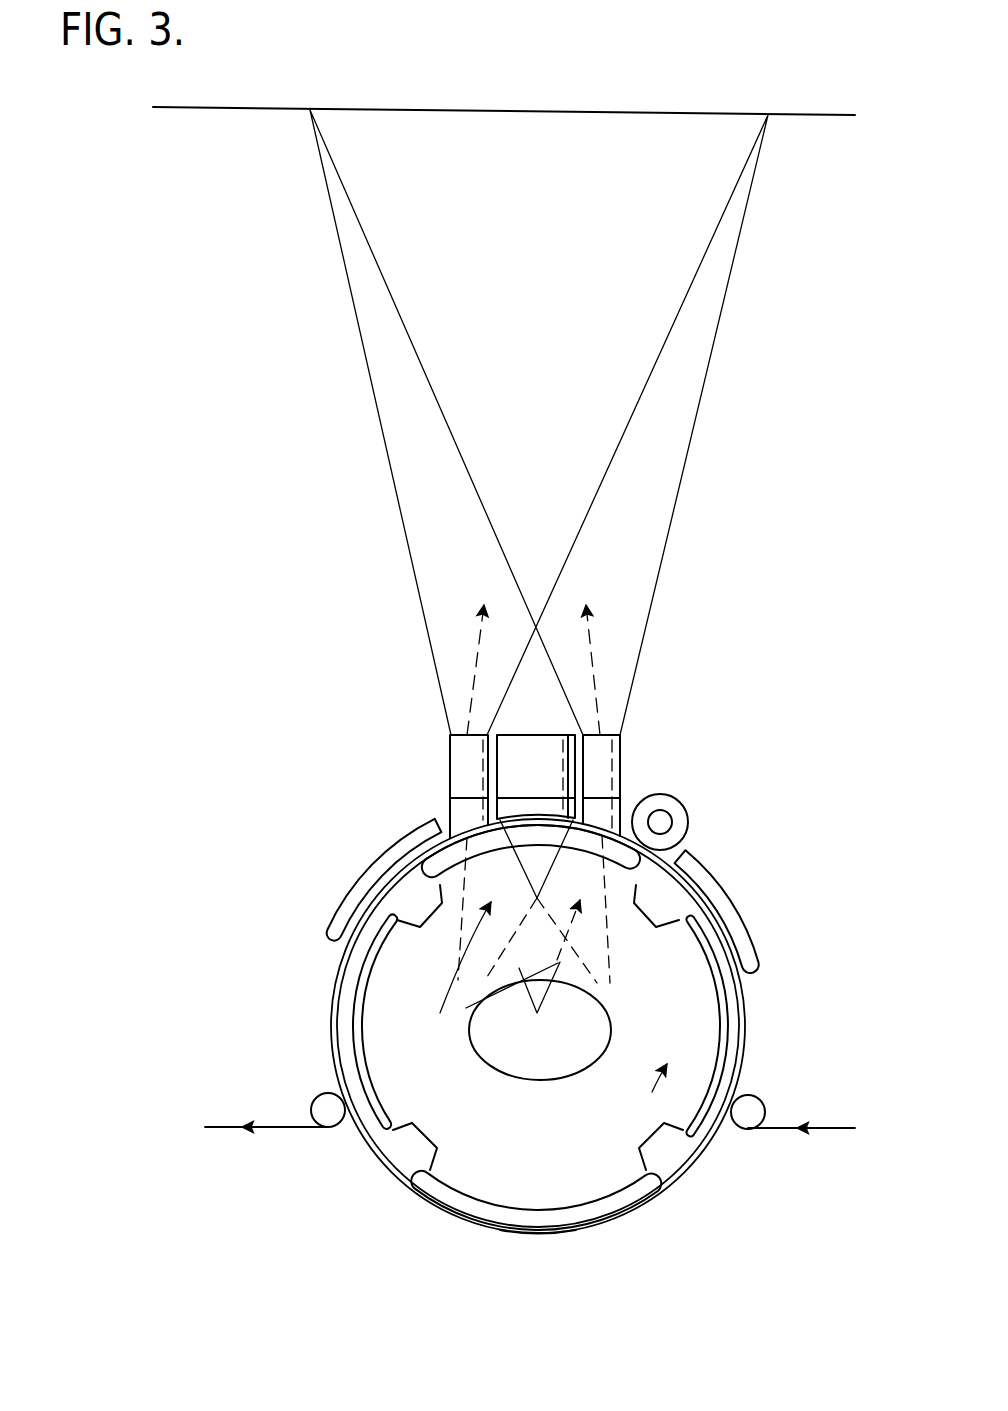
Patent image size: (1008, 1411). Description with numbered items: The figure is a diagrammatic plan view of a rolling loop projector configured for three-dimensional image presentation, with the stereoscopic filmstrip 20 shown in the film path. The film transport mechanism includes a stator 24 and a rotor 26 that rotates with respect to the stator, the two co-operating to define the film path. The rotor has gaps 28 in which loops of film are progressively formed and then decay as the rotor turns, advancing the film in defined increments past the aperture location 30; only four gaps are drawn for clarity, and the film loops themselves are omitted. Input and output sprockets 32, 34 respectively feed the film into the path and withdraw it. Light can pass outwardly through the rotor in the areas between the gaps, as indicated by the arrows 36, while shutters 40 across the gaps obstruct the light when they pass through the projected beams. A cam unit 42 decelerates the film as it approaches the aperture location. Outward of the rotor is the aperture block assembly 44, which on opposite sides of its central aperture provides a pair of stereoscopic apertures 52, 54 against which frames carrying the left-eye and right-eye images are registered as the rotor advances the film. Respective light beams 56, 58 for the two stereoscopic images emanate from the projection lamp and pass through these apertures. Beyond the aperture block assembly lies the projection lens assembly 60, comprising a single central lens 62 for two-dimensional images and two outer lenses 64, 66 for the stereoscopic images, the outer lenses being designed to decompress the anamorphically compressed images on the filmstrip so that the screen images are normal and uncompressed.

The filmstrip 20 is at (838, 1128).
The stator 24 is at (330, 927).
The rotor 26 is at (496, 1240).
The gaps 28 is at (660, 900).
The aperture location 30 is at (697, 773).
The input sprocket 32 is at (760, 1100).
The output sprocket 34 is at (320, 1100).
The arrows 36 is at (468, 1030).
The shutters 40 is at (412, 1123).
The cam unit 42 is at (690, 817).
The aperture block assembly 44 is at (440, 803).
The 3-D aperture 52 is at (408, 888).
The 3-D aperture 54 is at (598, 840).
The light beam 56 is at (462, 948).
The light beam 58 is at (600, 973).
The projection lens assembly 60 is at (650, 766).
The central lens 62 is at (538, 762).
The outer lens 64 is at (450, 753).
The outer lens 66 is at (620, 747).